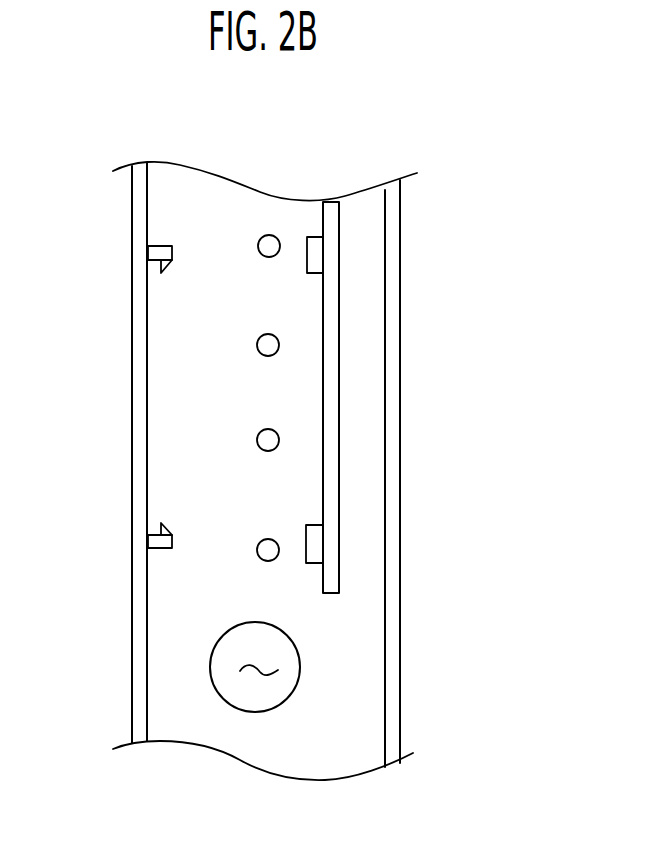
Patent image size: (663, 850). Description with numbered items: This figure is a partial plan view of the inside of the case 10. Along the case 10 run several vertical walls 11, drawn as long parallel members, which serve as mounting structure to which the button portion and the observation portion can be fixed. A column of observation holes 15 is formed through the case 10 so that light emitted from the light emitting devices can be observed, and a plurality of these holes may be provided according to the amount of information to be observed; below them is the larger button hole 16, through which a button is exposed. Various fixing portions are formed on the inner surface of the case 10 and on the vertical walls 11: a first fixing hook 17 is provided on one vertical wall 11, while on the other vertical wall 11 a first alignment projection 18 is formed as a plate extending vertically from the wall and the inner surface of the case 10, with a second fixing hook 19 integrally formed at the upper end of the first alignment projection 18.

The case 10 is at (450, 580).
The vertical wall 11 is at (132, 677).
The observation hole 15 is at (269, 235).
The button hole 16 is at (250, 675).
The first fixing hook 17 is at (310, 251).
The first alignment projection 18 is at (166, 246).
The second fixing hook 19 is at (163, 275).